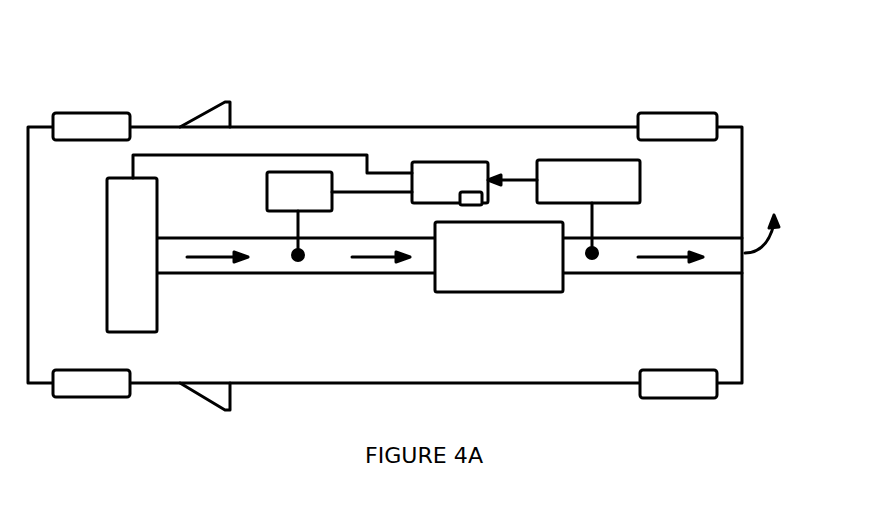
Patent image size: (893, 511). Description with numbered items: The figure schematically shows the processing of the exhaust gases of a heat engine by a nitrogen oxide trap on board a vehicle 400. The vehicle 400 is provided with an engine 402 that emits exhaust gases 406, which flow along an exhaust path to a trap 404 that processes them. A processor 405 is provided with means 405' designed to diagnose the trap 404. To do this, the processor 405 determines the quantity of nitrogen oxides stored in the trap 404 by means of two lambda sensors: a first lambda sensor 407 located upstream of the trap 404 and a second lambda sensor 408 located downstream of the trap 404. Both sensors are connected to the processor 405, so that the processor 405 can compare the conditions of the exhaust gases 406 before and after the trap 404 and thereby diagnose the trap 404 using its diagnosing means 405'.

The vehicle 400 is at (545, 127).
The engine 402 is at (105, 243).
The trap 404 is at (498, 293).
The processor 405 is at (456, 168).
The means designed to diagnose the trap 405' is at (500, 206).
The exhaust gases 406 is at (210, 256).
The lambda sensor 407 is at (267, 186).
The lambda sensor 408 is at (565, 160).